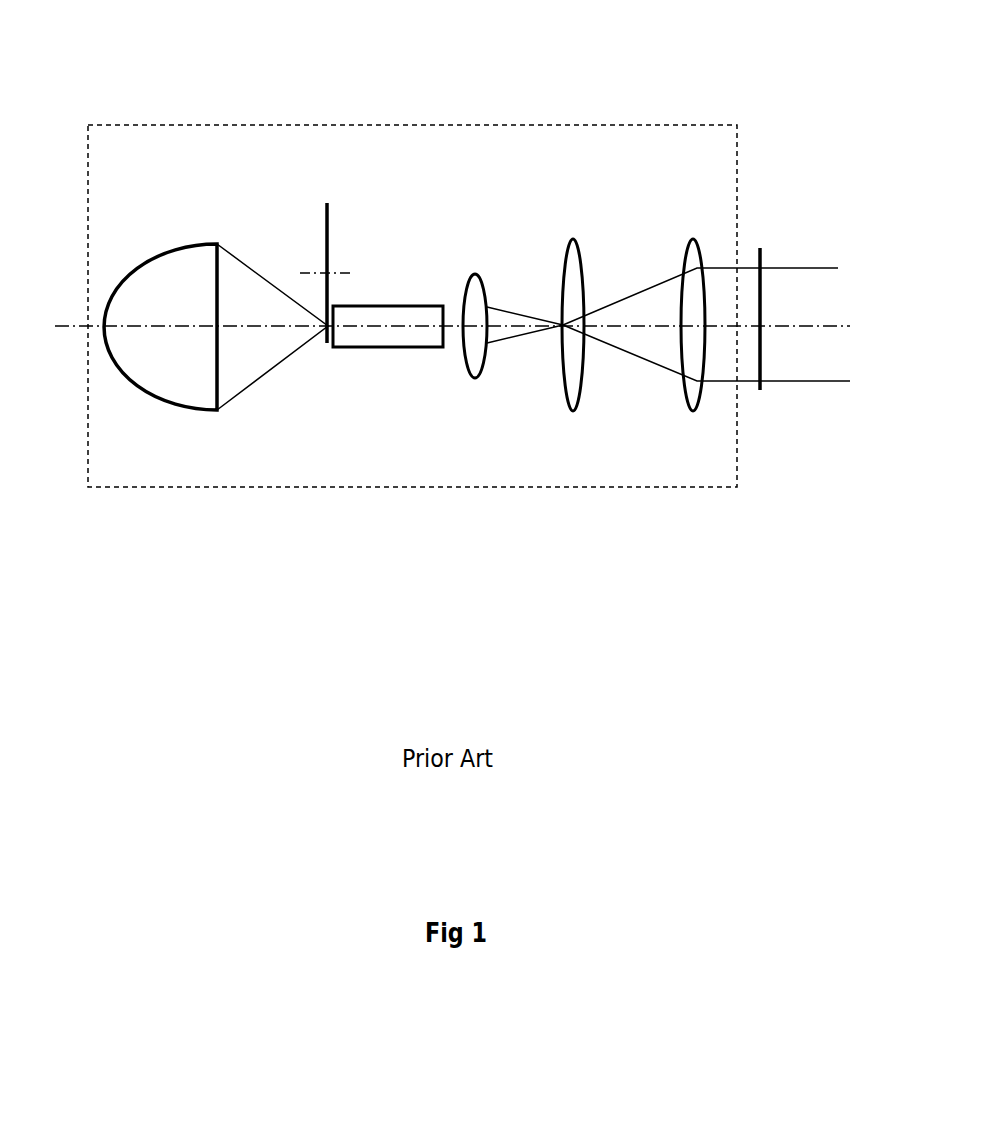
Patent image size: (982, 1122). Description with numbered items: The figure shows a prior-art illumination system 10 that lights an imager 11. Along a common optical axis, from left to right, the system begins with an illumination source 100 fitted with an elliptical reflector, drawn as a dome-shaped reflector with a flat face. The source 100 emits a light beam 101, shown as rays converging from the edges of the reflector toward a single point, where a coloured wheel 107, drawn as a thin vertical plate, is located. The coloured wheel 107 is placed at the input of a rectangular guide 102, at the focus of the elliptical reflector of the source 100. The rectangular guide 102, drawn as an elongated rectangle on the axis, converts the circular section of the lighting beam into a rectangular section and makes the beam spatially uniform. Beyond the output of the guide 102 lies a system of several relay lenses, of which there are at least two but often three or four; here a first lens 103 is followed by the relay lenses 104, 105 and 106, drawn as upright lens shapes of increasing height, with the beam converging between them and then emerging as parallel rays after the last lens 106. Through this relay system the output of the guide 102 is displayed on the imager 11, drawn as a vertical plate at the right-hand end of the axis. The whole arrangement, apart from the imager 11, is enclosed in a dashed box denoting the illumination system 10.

The illumination system 10 is at (178, 125).
The illumination source 100 is at (180, 247).
The light beam 101 is at (243, 267).
The coloured wheel 107 is at (333, 212).
The rectangular guide 102 is at (385, 348).
The relay lens 103 is at (472, 272).
The relay lens 104 is at (493, 348).
The relay lens 105 is at (563, 250).
The relay lens 106 is at (692, 243).
The imager 11 is at (762, 390).